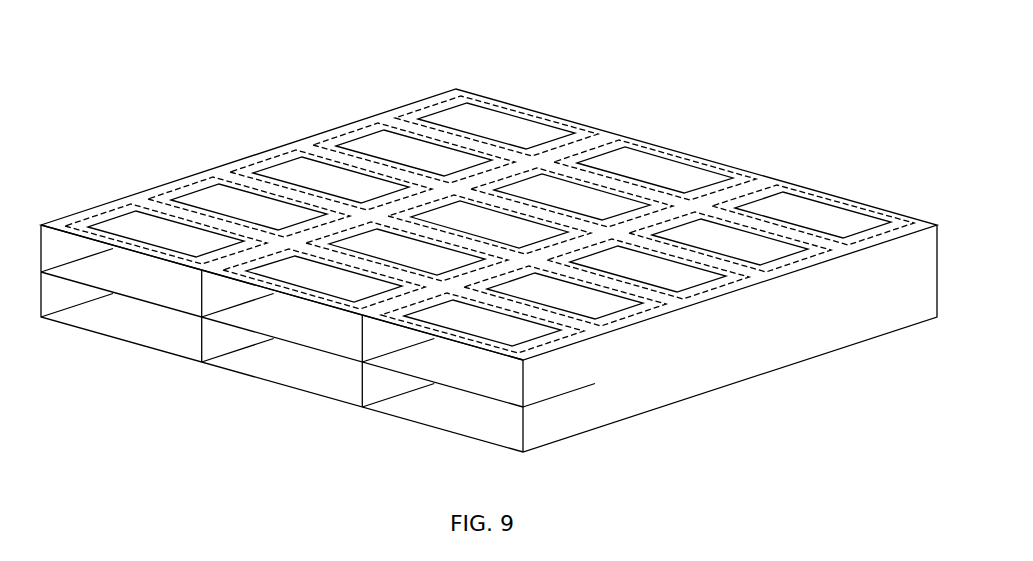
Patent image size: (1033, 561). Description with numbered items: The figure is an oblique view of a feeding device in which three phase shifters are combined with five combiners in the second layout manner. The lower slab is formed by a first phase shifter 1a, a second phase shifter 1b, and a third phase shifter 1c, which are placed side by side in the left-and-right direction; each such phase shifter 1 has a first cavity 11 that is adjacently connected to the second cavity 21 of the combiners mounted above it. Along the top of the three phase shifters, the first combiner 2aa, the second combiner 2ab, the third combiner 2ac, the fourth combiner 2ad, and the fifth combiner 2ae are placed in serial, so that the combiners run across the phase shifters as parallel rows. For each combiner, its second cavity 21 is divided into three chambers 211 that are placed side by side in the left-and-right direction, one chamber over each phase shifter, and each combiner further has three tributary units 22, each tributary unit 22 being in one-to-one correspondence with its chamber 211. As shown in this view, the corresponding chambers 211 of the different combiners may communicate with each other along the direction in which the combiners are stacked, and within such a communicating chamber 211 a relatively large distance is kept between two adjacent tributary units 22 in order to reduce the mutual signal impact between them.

The phase shifter 1 is at (173, 338).
The first cavity 11 is at (282, 355).
The first phase shifter 1a is at (102, 317).
The second phase shifter 1b is at (249, 357).
The third phase shifter 1c is at (408, 402).
The second cavity 21 is at (747, 185).
The chamber 211 is at (583, 137).
The tributary unit 22 is at (812, 213).
The first combiner 2aa is at (100, 220).
The second combiner 2ab is at (163, 200).
The third combiner 2ac is at (268, 153).
The fourth combiner 2ad is at (345, 130).
The fifth combiner 2ae is at (418, 104).